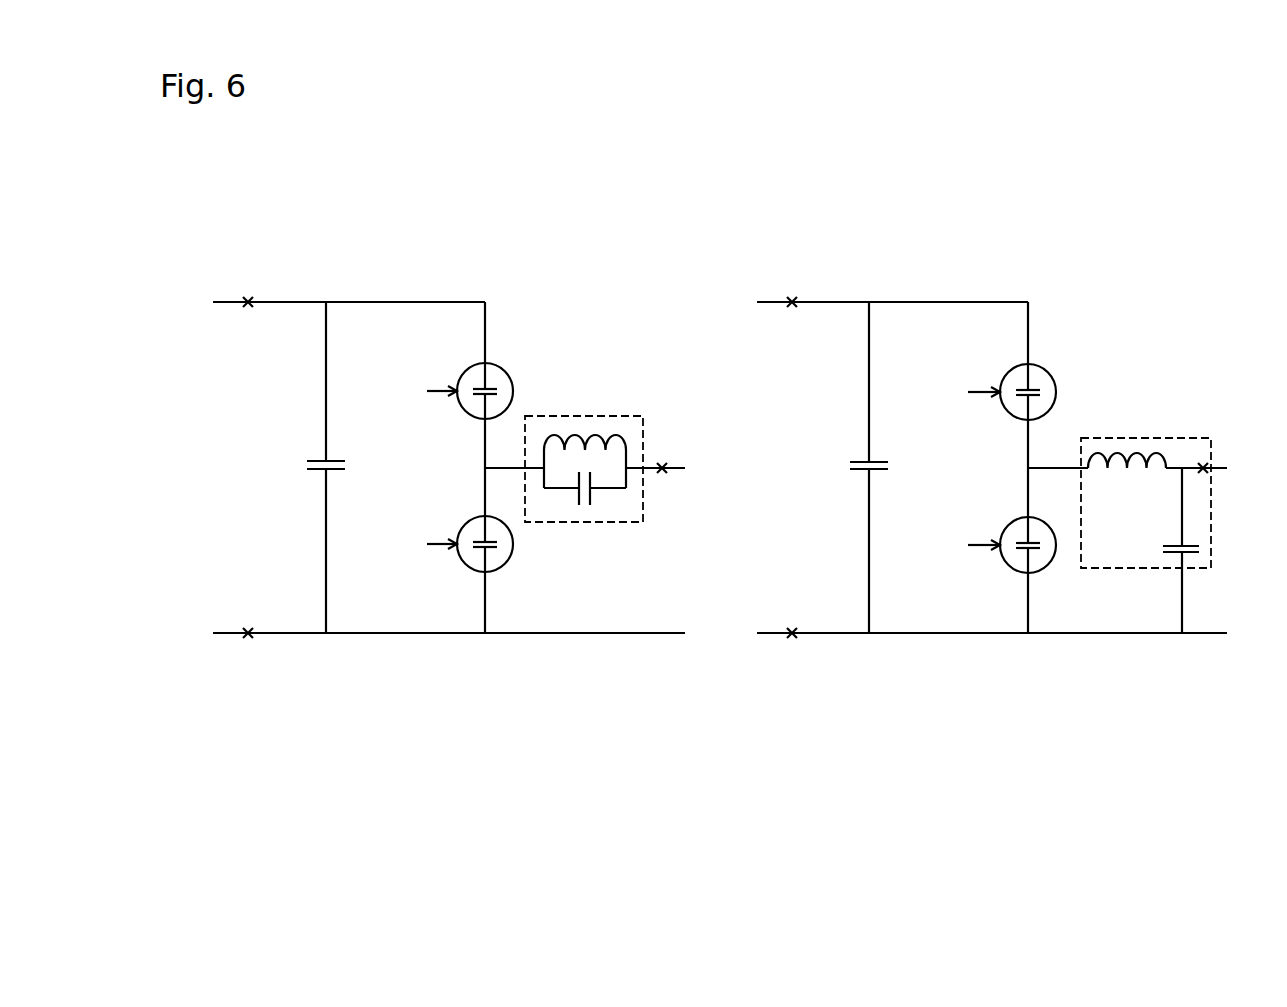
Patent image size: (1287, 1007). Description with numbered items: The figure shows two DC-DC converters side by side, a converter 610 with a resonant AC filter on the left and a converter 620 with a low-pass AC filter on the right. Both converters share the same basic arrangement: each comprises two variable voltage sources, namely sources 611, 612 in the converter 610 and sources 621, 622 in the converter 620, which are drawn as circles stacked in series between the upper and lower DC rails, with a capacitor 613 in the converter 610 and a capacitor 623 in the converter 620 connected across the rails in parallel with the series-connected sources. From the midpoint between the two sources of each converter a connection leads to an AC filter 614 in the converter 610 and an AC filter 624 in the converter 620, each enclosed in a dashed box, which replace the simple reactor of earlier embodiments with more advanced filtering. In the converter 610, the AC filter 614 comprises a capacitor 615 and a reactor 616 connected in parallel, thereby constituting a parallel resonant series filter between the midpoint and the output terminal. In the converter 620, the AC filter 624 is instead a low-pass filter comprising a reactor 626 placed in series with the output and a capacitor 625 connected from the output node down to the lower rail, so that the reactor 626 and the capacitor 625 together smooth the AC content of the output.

The converter 610 is at (277, 735).
The variable voltage source 611 is at (498, 383).
The variable voltage source 612 is at (498, 549).
The capacitor 613 is at (349, 467).
The AC filter 614 is at (667, 447).
The capacitor 615 is at (603, 515).
The reactor 616 is at (599, 420).
The converter 620 is at (833, 741).
The variable voltage source 621 is at (1038, 383).
The variable voltage source 622 is at (1033, 562).
The capacitor 623 is at (892, 467).
The AC filter 624 is at (1220, 493).
The capacitor 625 is at (1193, 560).
The reactor 626 is at (1144, 443).